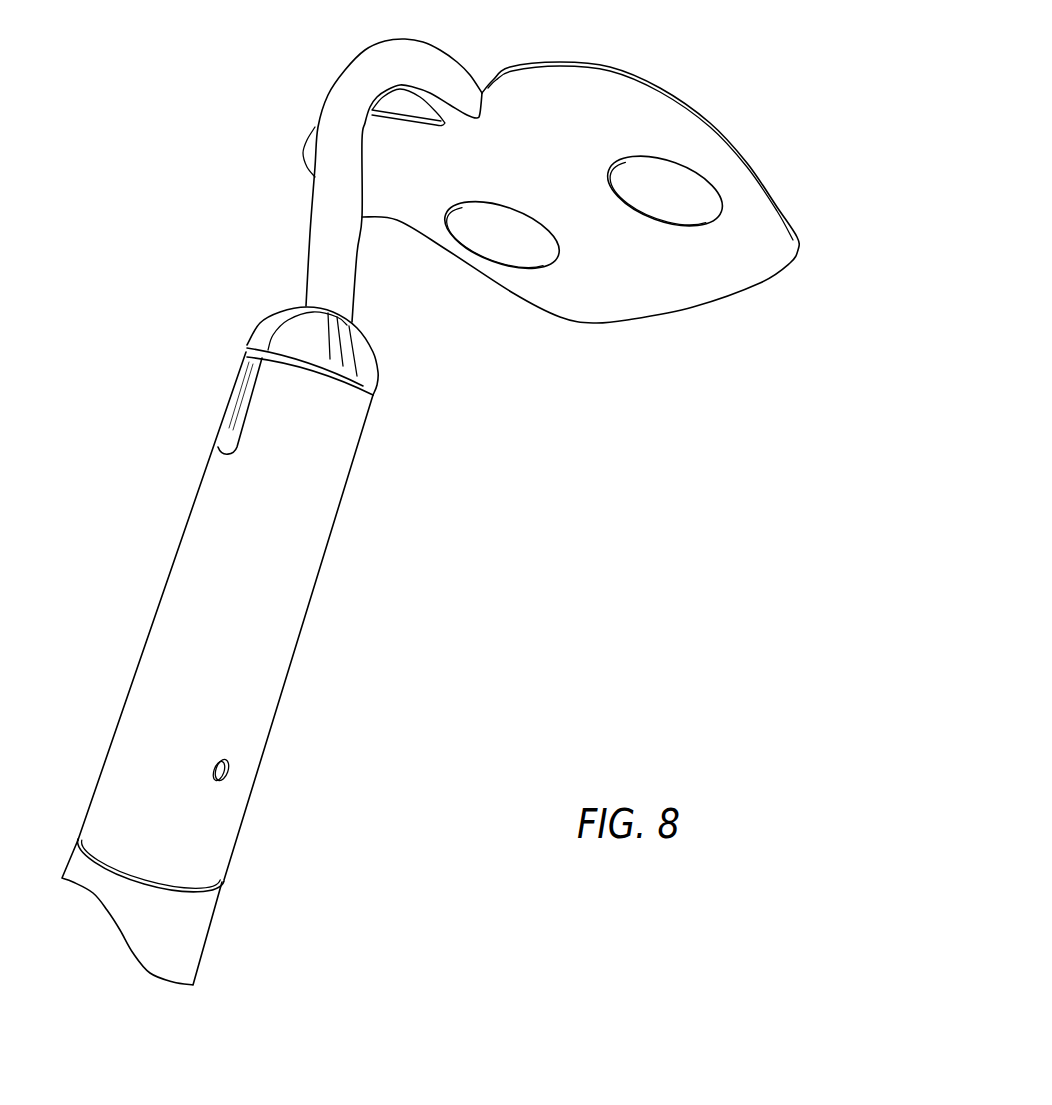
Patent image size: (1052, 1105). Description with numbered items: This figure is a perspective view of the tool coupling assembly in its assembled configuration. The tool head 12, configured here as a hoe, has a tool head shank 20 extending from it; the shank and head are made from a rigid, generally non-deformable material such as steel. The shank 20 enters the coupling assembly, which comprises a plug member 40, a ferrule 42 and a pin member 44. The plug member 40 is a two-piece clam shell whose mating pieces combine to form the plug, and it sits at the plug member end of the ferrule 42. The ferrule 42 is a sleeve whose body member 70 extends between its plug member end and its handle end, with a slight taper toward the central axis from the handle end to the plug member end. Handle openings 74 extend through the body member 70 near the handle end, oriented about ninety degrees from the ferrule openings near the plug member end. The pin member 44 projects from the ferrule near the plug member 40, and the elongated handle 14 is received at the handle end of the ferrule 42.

The tool head 12 is at (668, 87).
The tool head shank 20 is at (332, 267).
The plug member 40 is at (387, 345).
The pin member 44 is at (236, 418).
The body member 70 is at (231, 628).
The ferrule 42 is at (292, 689).
The handle openings 74 is at (232, 772).
The elongated handle 14 is at (188, 944).